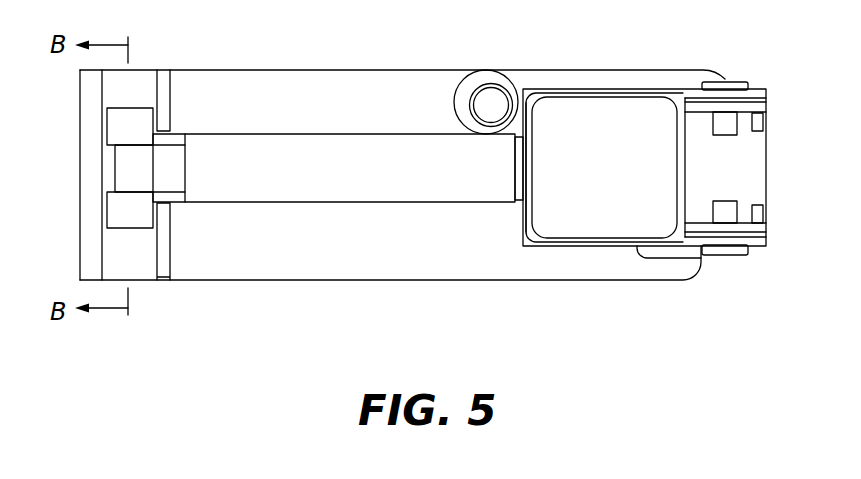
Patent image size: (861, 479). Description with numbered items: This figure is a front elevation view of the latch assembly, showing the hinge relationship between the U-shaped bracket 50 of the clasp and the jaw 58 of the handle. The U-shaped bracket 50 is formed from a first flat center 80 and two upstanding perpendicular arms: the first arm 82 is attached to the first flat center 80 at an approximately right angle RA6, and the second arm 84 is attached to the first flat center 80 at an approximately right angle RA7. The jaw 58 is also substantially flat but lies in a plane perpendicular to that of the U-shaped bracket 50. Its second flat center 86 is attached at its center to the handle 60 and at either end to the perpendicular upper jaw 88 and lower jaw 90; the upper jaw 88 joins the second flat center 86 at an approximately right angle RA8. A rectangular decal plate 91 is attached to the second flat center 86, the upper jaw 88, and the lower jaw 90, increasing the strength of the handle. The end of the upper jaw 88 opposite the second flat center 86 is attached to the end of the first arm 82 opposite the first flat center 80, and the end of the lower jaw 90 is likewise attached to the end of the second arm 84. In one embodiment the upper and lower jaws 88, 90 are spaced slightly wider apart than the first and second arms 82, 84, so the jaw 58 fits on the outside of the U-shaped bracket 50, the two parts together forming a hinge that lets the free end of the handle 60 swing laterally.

The U-shaped bracket 50 is at (808, 121).
The jaw 58 is at (561, 262).
The handle 60 is at (348, 195).
The first flat center 80 is at (725, 167).
The first arm 82 is at (768, 108).
The second arm 84 is at (768, 227).
The second flat center 86 is at (528, 165).
The upper jaw 88 is at (610, 97).
The lower jaw 90 is at (588, 243).
The decal plate 91 is at (604, 167).
The approximately right angle 6 RA6 is at (758, 124).
The approximately right angle 7 RA7 is at (756, 210).
The approximately right angle 8 RA8 is at (528, 90).